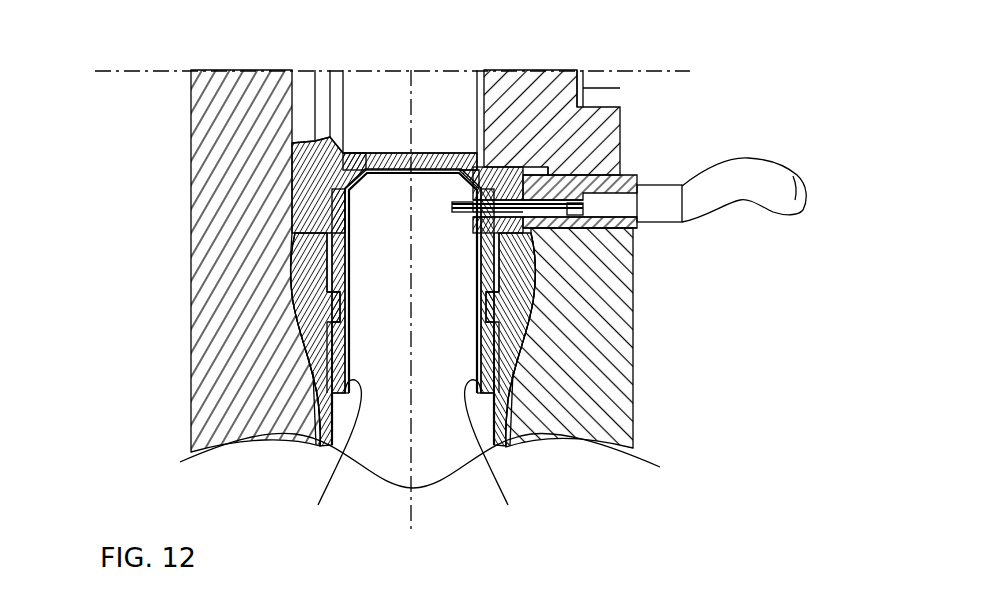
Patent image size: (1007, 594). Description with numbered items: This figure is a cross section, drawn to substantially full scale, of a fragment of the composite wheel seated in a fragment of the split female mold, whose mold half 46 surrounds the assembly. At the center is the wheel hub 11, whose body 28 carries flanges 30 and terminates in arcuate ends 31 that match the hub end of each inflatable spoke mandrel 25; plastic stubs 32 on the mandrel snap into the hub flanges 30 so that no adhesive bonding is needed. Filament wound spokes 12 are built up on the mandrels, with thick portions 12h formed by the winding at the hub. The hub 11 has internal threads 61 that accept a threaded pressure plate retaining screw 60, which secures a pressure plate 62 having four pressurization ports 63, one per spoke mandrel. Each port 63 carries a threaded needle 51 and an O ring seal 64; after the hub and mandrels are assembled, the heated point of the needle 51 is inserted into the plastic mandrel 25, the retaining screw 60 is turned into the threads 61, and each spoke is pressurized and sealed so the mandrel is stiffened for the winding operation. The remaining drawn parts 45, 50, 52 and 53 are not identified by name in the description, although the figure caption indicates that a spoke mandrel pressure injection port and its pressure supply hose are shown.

The wheel hub 11 is at (343, 72).
The filament wound spoke 12 is at (315, 415).
The built up thick portion 12h is at (290, 278).
The inflatable spoke mandrel 25 is at (470, 197).
The hub body 28 is at (320, 190).
The hub flange 30 is at (325, 353).
The arcuate end 31 is at (377, 172).
The plastic stub 32 is at (323, 310).
The piston body left portion 45 is at (210, 250).
The female mold half 46 is at (568, 423).
The fuel injector 50 is at (630, 178).
The threaded needle 51 is at (457, 213).
The injector connector 52 is at (633, 230).
The fuel hose 53 is at (700, 213).
The pressure plate retaining screw 60 is at (540, 78).
The internal threads 61 is at (577, 75).
The pressure plate 62 is at (600, 158).
The pressurization port 63 is at (483, 240).
The O ring seal 64 is at (510, 170).